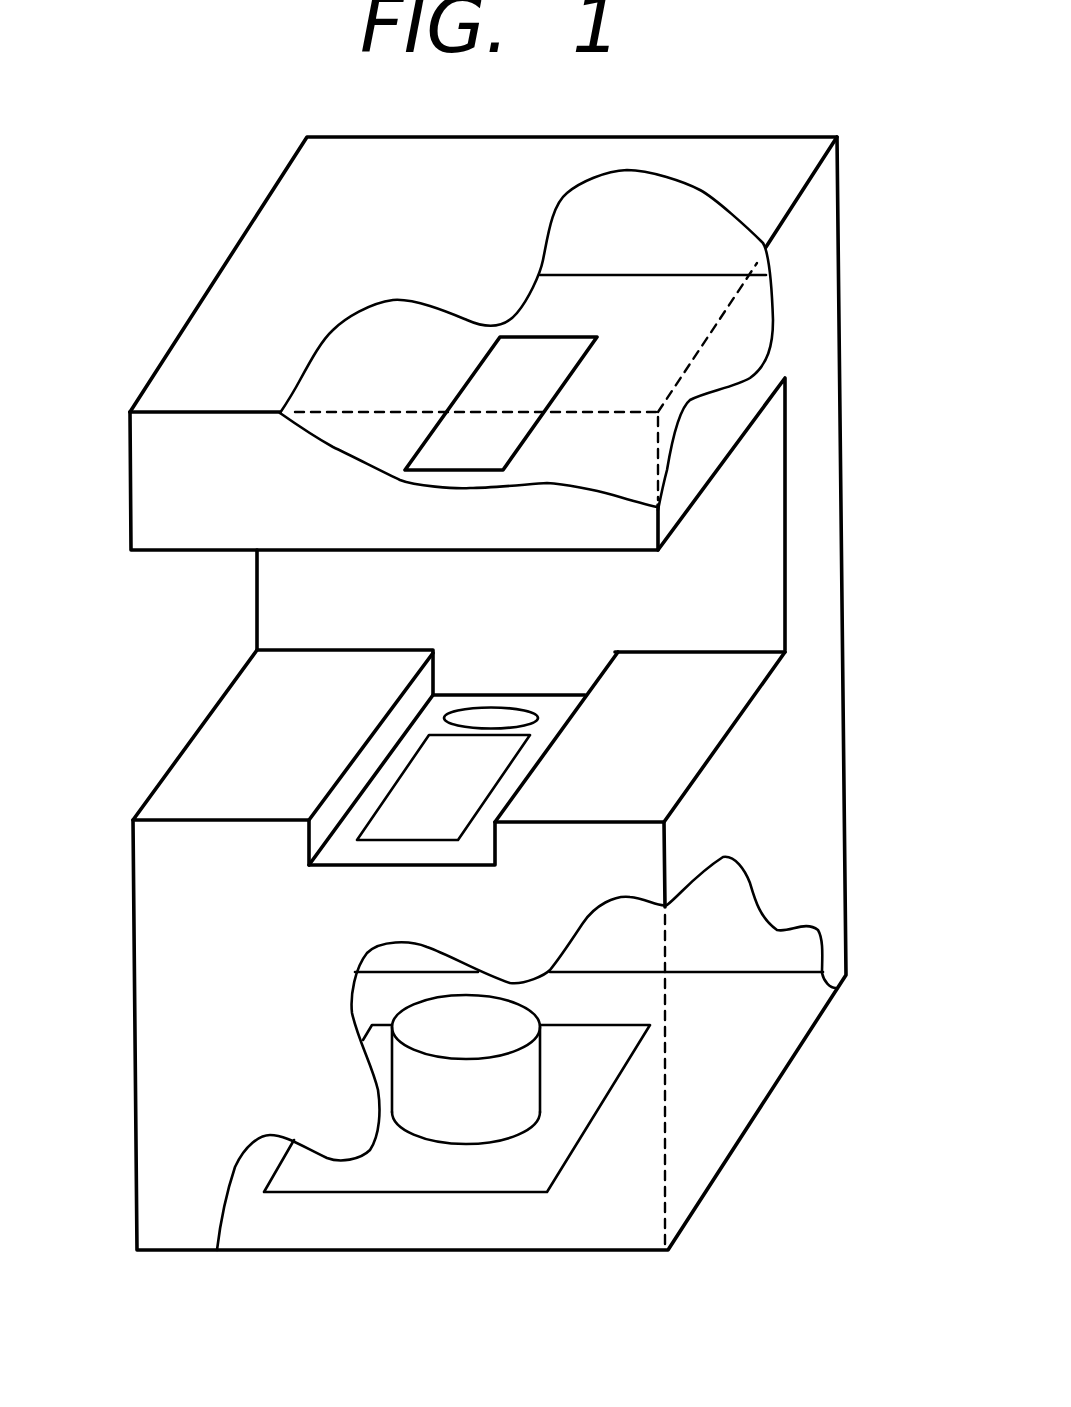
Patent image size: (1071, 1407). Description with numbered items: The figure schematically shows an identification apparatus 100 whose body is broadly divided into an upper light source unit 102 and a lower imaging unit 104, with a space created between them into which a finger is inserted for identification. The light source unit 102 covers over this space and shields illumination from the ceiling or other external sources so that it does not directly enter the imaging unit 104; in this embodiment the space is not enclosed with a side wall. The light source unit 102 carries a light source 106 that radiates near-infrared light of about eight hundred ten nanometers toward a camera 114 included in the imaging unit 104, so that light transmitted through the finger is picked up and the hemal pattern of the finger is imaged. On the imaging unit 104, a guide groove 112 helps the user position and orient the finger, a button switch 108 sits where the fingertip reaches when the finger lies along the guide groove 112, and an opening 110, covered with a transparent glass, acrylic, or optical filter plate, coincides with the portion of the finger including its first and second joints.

The identification apparatus 100 is at (840, 292).
The light source unit 102 is at (150, 468).
The imaging unit 104 is at (157, 973).
The light source 106 is at (553, 358).
The button switch 108 is at (467, 704).
The opening 110 is at (415, 827).
The guide groove 112 is at (364, 772).
The camera 114 is at (537, 1170).